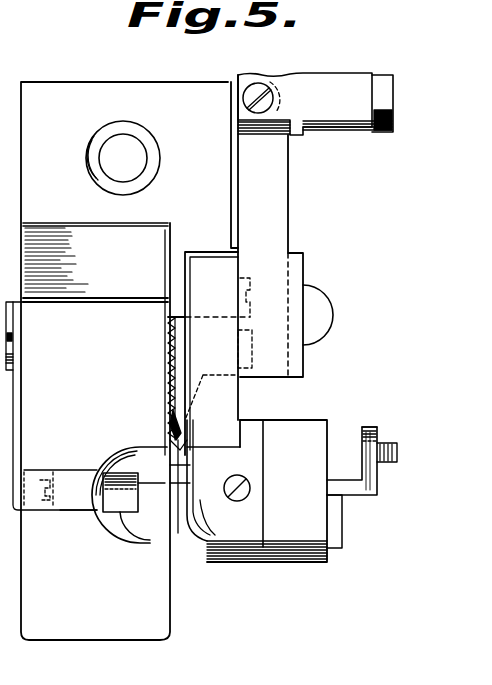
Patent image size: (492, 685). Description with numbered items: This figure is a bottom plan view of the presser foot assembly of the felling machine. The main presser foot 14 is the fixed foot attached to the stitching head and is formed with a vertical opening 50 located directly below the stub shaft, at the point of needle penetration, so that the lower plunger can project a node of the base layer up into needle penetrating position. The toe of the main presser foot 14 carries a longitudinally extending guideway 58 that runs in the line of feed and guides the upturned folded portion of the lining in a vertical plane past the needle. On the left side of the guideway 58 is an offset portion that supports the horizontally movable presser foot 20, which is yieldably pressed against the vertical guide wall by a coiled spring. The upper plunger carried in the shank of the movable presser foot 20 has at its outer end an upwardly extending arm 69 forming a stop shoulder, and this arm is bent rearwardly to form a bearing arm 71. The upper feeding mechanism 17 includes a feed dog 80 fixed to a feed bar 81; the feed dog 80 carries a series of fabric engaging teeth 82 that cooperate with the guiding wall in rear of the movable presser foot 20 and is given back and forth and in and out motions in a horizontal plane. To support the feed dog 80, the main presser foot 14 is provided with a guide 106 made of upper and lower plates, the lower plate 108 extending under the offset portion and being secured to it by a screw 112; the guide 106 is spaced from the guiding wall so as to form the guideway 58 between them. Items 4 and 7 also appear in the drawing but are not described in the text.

The frame 4 is at (48, 326).
The support 7 is at (213, 62).
The main presser foot 14 is at (203, 186).
The upper feeding mechanism 17 is at (294, 208).
The feed bar 81 is at (288, 238).
The lower plate 108 is at (220, 287).
The guide 106 is at (218, 355).
The feed dog 80 is at (175, 384).
The fabric engaging teeth 82 is at (170, 405).
The vertical opening 50 is at (150, 510).
The movable presser foot 20 is at (183, 533).
The guideway 58 is at (180, 558).
The screw 112 is at (250, 488).
The upwardly extending arm 69 is at (348, 484).
The bearing arm 71 is at (362, 430).